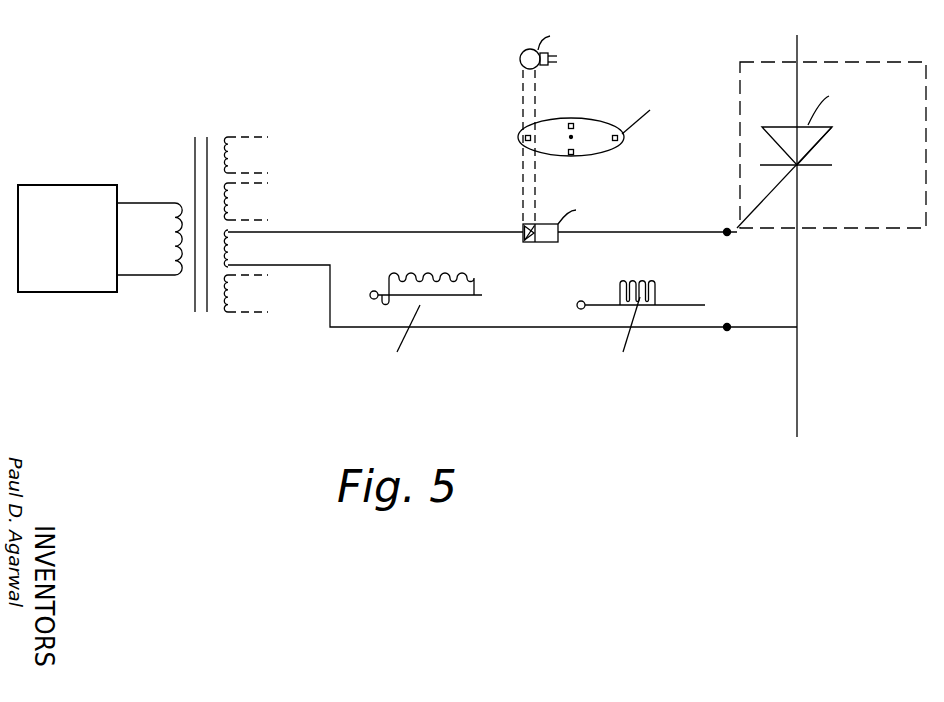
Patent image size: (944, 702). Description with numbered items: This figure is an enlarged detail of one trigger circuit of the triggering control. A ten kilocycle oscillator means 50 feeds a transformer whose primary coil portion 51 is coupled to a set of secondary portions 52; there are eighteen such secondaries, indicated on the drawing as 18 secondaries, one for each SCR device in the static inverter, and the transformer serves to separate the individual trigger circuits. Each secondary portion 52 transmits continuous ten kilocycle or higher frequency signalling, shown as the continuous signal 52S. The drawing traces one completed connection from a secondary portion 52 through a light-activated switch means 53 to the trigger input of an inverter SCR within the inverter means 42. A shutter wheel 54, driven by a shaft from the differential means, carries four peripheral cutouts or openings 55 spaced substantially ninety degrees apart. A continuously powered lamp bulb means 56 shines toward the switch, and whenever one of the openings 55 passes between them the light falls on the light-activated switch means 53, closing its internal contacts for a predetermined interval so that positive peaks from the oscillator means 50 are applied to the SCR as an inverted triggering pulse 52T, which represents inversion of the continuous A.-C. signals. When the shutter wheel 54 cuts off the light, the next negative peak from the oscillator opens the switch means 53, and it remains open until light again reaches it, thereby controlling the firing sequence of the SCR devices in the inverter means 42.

The secondaries 18 is at (285, 205).
The inverter means 42 is at (837, 228).
The oscillator means 50 is at (50, 292).
The primary coil portion 51 is at (176, 243).
The secondary portions 52 is at (228, 163).
The continuous ten kilocycle signal 52S is at (408, 276).
The triggering pulse 52T is at (637, 283).
The light-activated switch means 53 is at (526, 242).
The shutter wheel 54 is at (612, 150).
The cutouts or openings 55 is at (613, 140).
The lamp bulb means 56 is at (520, 59).